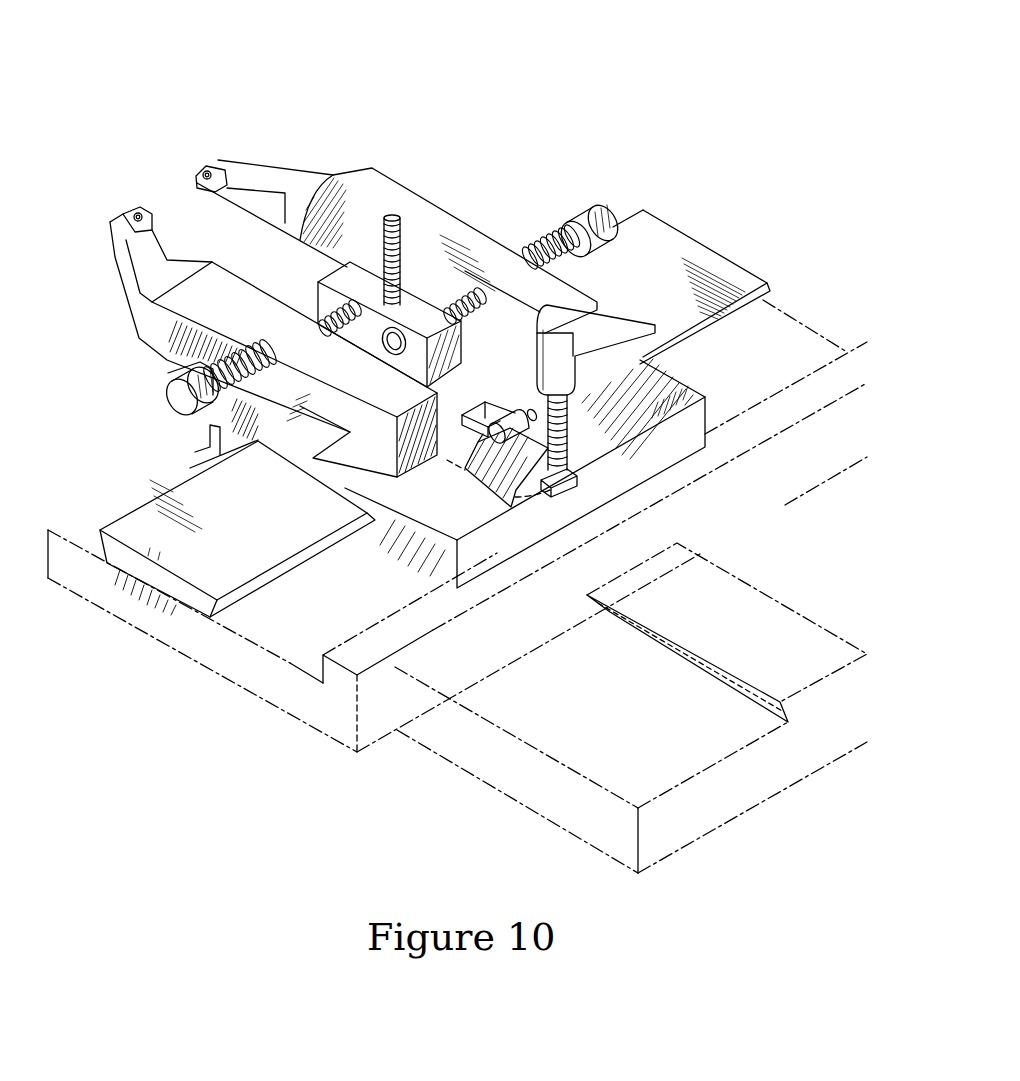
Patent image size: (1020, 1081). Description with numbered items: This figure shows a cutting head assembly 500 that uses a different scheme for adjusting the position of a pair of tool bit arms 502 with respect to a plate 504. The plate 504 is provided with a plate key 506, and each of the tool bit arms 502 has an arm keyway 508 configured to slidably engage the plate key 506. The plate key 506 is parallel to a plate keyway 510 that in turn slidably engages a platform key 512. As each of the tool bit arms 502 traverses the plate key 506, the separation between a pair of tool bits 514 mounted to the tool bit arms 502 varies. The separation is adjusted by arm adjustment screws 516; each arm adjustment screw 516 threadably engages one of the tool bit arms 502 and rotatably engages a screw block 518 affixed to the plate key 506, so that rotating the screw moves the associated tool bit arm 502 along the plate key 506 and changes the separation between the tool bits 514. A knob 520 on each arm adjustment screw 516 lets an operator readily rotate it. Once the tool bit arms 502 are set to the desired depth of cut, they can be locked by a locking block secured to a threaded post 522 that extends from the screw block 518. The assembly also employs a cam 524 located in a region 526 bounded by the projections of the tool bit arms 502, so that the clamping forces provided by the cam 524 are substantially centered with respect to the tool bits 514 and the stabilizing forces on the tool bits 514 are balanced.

The cutting head assembly 500 is at (527, 90).
The tool bit arms 502 is at (223, 270).
The plate 504 is at (697, 385).
The plate key 506 is at (293, 437).
The arm keyway 508 is at (300, 392).
The plate keyway 510 is at (360, 525).
The platform key 512 is at (127, 563).
The tool bits 514 is at (223, 183).
The arm adjustment screws 516 is at (178, 367).
The screw block 518 is at (355, 278).
The knob 520 is at (180, 407).
The threaded post 522 is at (397, 220).
The cam 524 is at (570, 483).
The region 526 is at (503, 383).